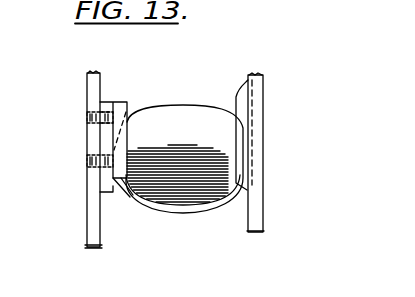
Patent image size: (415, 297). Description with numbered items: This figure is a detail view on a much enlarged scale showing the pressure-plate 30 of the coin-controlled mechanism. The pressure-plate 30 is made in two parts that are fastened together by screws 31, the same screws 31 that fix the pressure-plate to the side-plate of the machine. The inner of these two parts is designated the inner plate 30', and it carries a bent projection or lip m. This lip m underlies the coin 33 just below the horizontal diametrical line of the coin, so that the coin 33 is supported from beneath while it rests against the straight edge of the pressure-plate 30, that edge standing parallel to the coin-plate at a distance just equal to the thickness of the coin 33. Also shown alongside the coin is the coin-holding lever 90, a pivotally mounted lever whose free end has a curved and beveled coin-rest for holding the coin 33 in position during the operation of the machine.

The pressure-plate 30 is at (132, 128).
The inner plate 30' is at (120, 82).
The screws 31 is at (87, 117).
The coin 33 is at (183, 172).
The coin-holding lever 90 is at (265, 210).
The bent projection or lip m is at (134, 192).